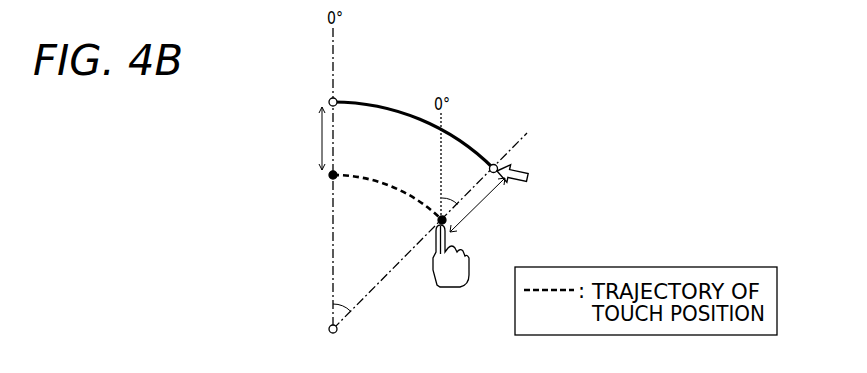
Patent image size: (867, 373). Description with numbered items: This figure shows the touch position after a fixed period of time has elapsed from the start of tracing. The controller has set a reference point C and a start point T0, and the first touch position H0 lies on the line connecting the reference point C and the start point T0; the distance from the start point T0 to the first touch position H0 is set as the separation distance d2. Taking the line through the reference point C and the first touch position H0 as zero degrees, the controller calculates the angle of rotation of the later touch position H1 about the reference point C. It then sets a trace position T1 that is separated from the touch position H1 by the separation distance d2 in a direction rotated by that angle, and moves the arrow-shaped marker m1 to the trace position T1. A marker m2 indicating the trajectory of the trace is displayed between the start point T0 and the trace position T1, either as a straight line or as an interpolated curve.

The reference point C is at (329, 329).
The start point T0 is at (329, 100).
The trace position T1 is at (493, 165).
The first touch position H0 is at (329, 177).
The touch position H1 is at (438, 220).
The marker m1 is at (529, 171).
The marker m2 is at (399, 110).
The separation distance d2 is at (400, 169).